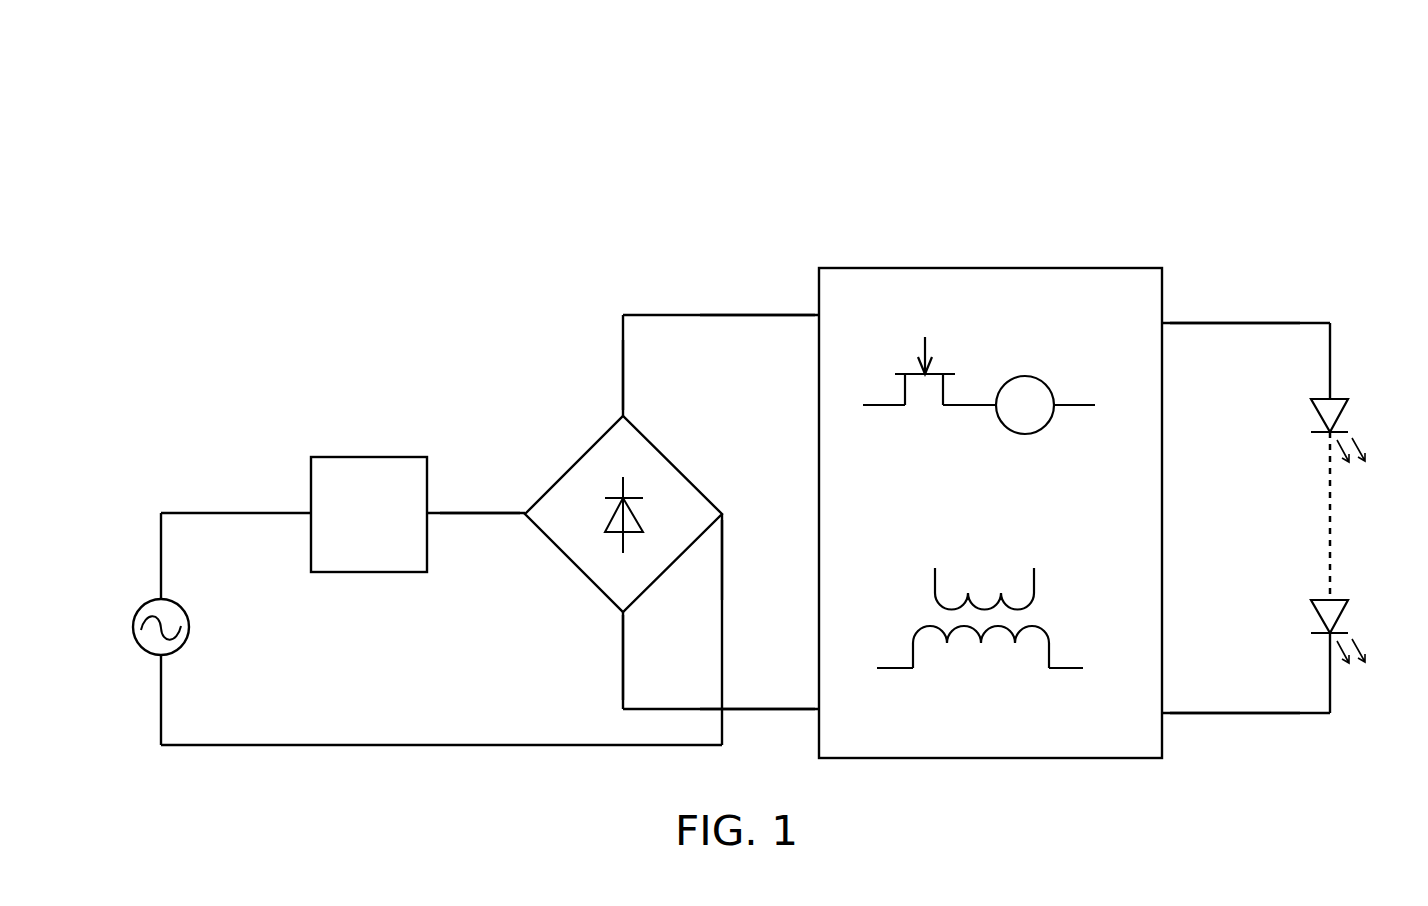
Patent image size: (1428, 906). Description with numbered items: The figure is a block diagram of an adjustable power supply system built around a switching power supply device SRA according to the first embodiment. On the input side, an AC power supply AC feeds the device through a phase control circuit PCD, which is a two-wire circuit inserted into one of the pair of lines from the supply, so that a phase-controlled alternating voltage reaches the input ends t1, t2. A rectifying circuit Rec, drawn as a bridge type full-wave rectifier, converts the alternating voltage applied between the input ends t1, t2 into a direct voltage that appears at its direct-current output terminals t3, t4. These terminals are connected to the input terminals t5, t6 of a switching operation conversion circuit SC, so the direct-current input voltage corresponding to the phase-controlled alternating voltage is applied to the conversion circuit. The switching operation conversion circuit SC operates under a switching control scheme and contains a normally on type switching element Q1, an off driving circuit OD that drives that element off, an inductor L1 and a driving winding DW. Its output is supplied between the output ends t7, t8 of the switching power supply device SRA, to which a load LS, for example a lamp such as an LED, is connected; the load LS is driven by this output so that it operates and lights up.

The switching power supply device SRA is at (948, 82).
The AC power supply AC is at (135, 613).
The phase control circuit PCD is at (378, 457).
The rectifying circuit Rec is at (680, 468).
The switching operation conversion circuit SC is at (983, 268).
The normally on type switching element Q1 is at (927, 390).
The off driving circuit OD is at (1023, 375).
The driving winding DW is at (980, 598).
The inductor L1 is at (985, 648).
The load LS is at (1343, 413).
The input end t1 is at (492, 513).
The input end t2 is at (724, 537).
The direct-current output terminal t3 is at (623, 368).
The direct-current output terminal t4 is at (623, 645).
The input terminal t5 is at (768, 315).
The input terminal t6 is at (778, 712).
The output end t7 is at (1210, 323).
The output end t8 is at (1210, 713).